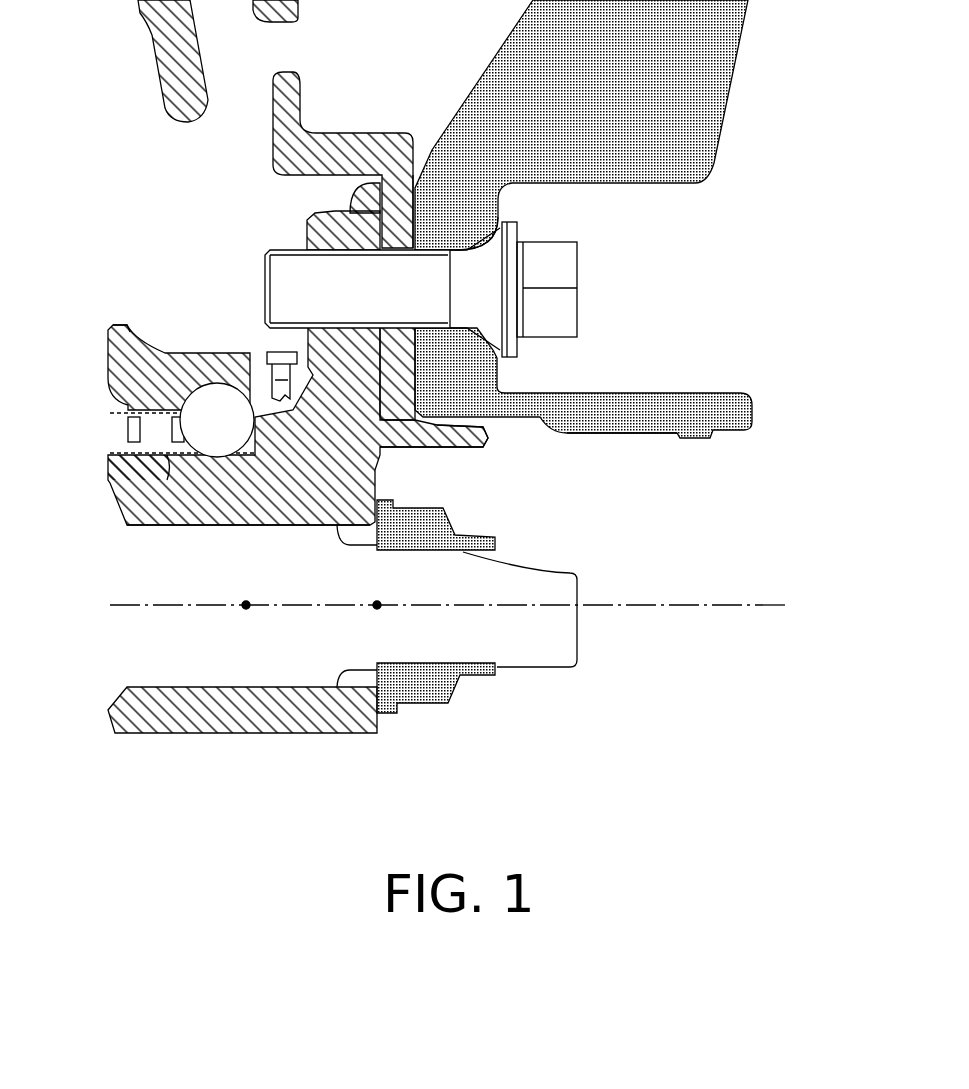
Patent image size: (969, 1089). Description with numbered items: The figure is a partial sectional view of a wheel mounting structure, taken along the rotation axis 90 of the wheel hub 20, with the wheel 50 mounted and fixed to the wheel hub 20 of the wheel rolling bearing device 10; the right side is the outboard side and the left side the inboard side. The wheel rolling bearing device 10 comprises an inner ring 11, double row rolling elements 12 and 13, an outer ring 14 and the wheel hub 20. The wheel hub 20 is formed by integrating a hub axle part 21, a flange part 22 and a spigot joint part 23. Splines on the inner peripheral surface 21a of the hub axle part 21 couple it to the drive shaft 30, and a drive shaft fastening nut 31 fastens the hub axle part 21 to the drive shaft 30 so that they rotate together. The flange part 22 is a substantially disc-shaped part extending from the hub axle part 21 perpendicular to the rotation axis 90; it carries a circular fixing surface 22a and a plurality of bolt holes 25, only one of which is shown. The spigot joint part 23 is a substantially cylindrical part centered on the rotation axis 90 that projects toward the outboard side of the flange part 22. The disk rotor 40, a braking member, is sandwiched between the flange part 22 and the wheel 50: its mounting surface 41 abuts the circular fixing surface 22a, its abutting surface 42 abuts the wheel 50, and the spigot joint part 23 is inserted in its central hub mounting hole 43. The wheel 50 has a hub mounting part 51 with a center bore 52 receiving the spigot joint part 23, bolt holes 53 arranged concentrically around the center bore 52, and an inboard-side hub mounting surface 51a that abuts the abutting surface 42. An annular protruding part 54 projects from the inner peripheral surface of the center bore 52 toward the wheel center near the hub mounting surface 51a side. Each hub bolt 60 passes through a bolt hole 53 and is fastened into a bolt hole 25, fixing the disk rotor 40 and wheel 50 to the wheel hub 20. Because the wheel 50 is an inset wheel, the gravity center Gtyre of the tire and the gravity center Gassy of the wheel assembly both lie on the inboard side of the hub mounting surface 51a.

The wheel rolling bearing device 10 is at (165, 391).
The inner ring 11 is at (112, 462).
The rolling elements 12 is at (108, 403).
The rolling elements 13 is at (190, 430).
The outer ring 14 is at (118, 328).
The wheel hub 20 is at (457, 596).
The hub axle part 21 is at (150, 500).
The inner peripheral surface 21a is at (157, 528).
The flange part 22 is at (313, 222).
The circular fixing surface 22a is at (312, 338).
The spigot joint part 23 is at (463, 430).
The bolt hole 25 is at (292, 247).
The drive shaft 30 is at (125, 590).
The drive shaft fastening nut 31 is at (445, 522).
The disk rotor 40 is at (374, 142).
The mounting surface 41 is at (352, 200).
The abutting surface 42 is at (417, 205).
The hub mounting hole 43 is at (416, 477).
The wheel 50 is at (617, 266).
The hub mounting part 51 is at (458, 125).
The hub mounting surface 51a is at (393, 385).
The center bore 52 is at (604, 532).
The bolt hole 53 is at (456, 247).
The annular protruding part 54 is at (430, 412).
The hub bolt 60 is at (545, 252).
The rotation axis 90 is at (128, 607).
The gravity center of the tire Gtyre is at (243, 608).
The gravity center of the wheel assembly Gassy is at (380, 608).